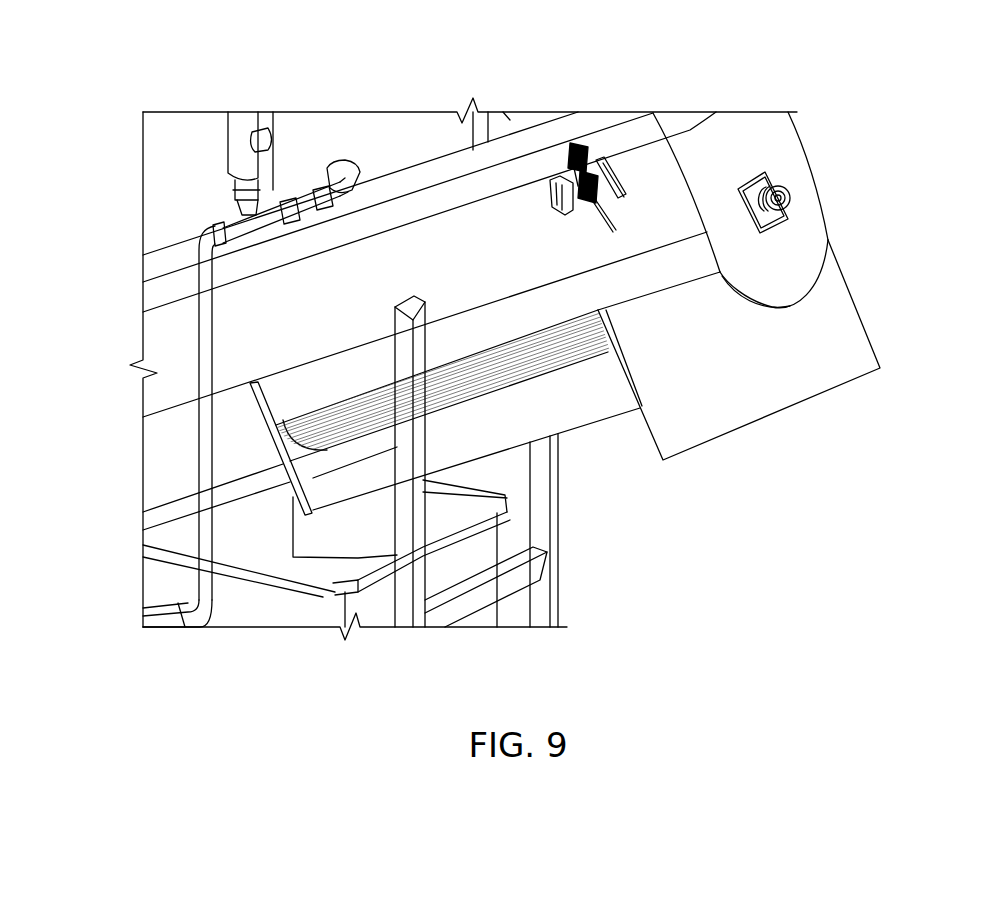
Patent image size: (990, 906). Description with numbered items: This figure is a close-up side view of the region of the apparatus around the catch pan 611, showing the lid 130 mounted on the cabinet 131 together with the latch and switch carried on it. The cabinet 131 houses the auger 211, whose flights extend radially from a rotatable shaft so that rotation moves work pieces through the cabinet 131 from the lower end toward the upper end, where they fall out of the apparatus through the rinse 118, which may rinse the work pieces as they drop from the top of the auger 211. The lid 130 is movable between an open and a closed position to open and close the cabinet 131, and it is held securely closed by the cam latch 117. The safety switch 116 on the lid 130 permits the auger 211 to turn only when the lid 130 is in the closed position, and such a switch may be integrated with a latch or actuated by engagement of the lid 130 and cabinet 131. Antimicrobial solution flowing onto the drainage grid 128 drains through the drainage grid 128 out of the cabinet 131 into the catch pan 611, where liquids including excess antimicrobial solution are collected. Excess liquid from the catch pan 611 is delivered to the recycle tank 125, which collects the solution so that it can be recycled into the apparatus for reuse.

The safety switch 116 is at (560, 180).
The cam latch 117 is at (580, 142).
The rinse 118 is at (850, 337).
The recycle tank 125 is at (285, 613).
The drainage grid 128 is at (543, 362).
The lid 130 is at (433, 205).
The cabinet 131 is at (787, 141).
The auger 211 is at (791, 193).
The catch pan 611 is at (580, 413).